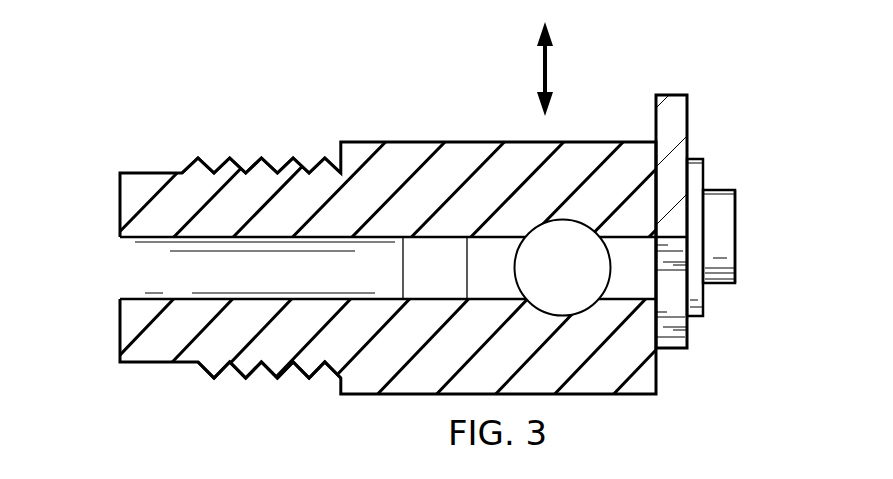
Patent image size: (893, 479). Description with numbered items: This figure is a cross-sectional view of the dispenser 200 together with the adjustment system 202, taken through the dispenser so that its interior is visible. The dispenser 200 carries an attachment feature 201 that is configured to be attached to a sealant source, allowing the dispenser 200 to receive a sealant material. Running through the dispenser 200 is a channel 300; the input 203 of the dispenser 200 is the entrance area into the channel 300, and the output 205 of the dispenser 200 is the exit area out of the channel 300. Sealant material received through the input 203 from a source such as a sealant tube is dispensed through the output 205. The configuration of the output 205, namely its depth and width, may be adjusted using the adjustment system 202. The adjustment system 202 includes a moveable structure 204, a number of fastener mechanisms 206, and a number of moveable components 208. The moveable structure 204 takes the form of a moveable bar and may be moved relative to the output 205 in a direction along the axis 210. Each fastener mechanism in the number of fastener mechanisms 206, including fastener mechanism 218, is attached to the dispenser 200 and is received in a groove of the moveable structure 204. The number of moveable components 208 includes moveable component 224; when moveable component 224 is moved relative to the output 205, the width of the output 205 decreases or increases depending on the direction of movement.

The dispenser 200 is at (368, 131).
The attachment feature 201 is at (283, 161).
The adjustment system 202 is at (695, 147).
The input 203 is at (120, 251).
The moveable structure 204 is at (677, 95).
The output 205 is at (665, 282).
The number of fastener mechanisms 206 is at (747, 208).
The number of moveable components 208 is at (582, 279).
The axis 210 is at (543, 68).
The fastener mechanism 218 is at (718, 190).
The moveable component 224 is at (519, 267).
The channel 300 is at (148, 279).